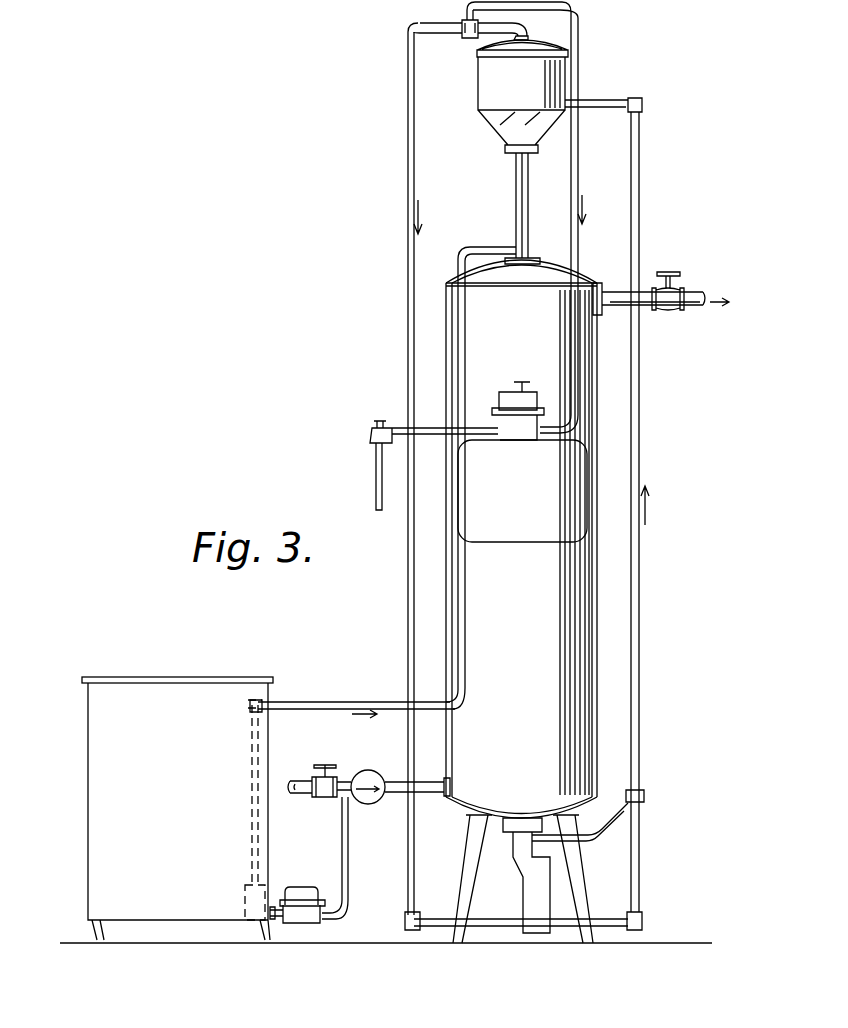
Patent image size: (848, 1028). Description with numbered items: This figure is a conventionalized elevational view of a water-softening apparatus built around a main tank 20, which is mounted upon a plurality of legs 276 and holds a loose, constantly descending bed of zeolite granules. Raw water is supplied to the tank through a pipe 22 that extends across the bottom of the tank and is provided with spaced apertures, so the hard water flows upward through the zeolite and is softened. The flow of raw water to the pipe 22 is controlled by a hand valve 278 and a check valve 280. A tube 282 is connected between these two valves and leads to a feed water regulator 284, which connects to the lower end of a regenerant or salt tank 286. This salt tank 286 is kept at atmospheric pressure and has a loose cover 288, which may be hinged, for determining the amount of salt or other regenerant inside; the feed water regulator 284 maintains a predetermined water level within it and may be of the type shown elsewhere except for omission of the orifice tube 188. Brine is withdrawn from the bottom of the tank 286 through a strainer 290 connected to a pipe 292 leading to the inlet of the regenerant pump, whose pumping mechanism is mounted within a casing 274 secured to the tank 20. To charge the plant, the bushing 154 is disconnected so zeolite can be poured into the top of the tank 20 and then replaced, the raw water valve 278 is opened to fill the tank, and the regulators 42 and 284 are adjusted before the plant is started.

The main tank 20 is at (576, 600).
The pipe 22 is at (399, 793).
The regulator 42 is at (508, 400).
The bushing 154 is at (463, 252).
The orifice tube 188 is at (392, 425).
The casing 274 is at (465, 510).
The legs 276 is at (582, 900).
The hand valve 278 is at (330, 798).
The check valve 280 is at (368, 770).
The tube 282 is at (345, 925).
The feed water regulator 284 is at (310, 922).
The regenerant tank 286 is at (117, 890).
The loose cover 288 is at (243, 646).
The strainer 290 is at (248, 928).
The pipe 292 is at (300, 700).